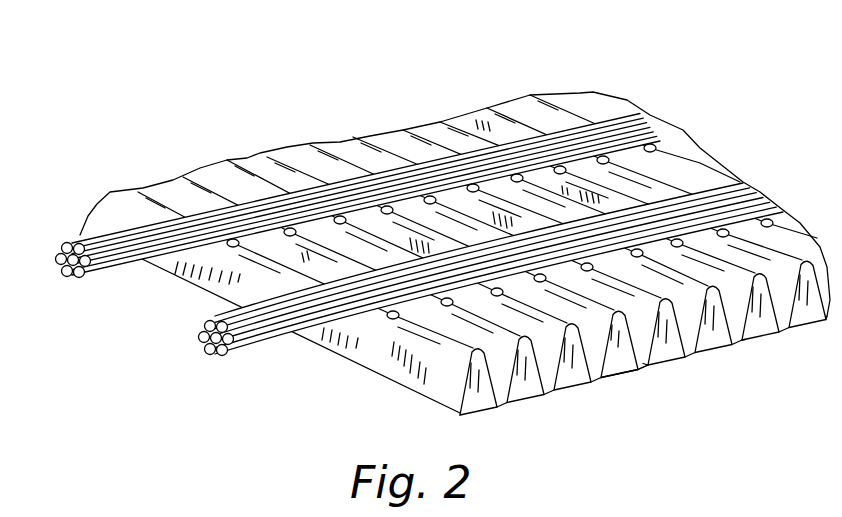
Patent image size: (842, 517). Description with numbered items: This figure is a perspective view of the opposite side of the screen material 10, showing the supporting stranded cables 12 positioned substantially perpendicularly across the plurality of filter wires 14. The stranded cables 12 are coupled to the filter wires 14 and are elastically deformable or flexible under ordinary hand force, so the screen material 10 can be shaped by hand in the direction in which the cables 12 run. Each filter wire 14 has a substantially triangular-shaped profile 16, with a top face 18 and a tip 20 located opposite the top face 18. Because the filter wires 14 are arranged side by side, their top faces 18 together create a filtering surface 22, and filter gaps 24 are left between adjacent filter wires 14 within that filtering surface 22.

The screen material 10 is at (689, 68).
The stranded cables 12 is at (200, 340).
The filter wires 14 is at (570, 383).
The triangular-shaped profile 16 is at (628, 361).
The top face 18 is at (623, 379).
The tip 20 is at (611, 316).
The filtering surface 22 is at (603, 431).
The filter gaps 24 is at (743, 341).